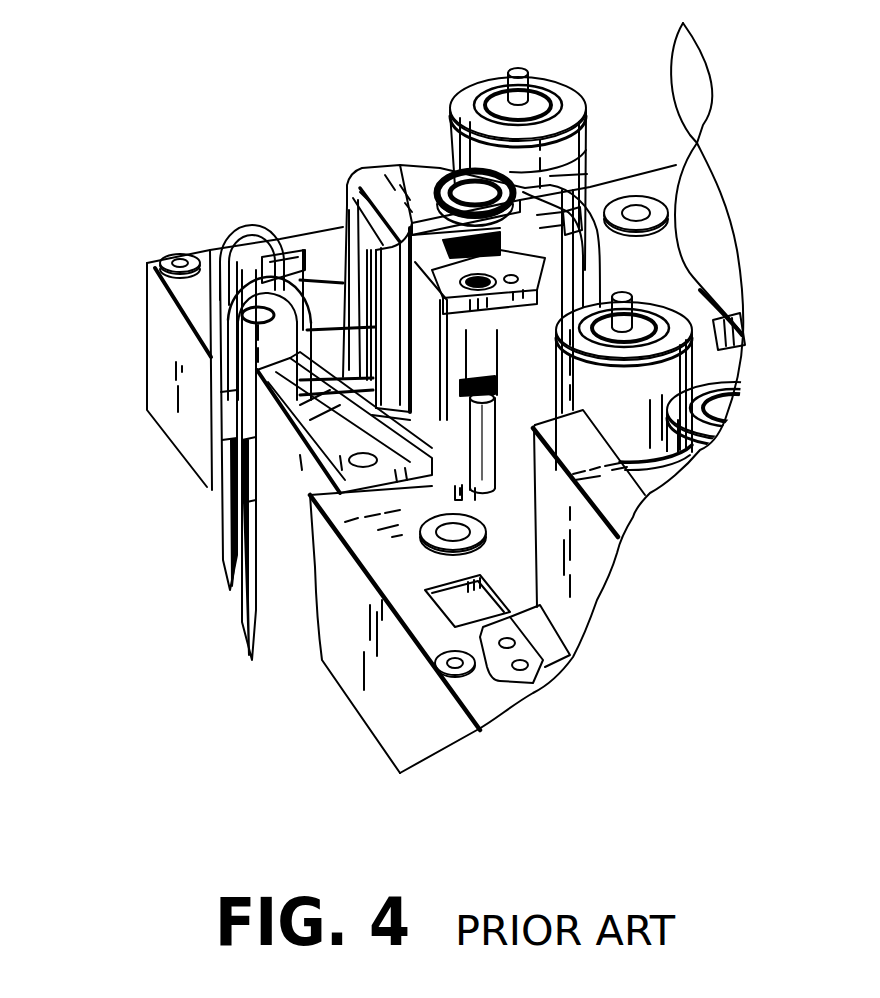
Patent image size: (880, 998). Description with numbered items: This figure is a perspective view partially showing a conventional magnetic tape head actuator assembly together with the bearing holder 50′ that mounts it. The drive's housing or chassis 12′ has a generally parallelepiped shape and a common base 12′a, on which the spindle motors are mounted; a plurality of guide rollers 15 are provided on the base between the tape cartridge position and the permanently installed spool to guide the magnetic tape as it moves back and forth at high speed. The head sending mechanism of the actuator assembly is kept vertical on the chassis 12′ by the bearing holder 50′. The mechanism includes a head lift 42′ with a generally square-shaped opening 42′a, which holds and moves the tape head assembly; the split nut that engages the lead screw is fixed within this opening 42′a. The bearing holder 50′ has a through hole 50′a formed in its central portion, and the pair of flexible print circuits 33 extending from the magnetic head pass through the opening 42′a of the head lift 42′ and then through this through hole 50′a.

The rollers (guide rollers) 15 is at (560, 88).
The bearing holder 50′ is at (343, 227).
The through hole 50′a is at (330, 230).
The housing (chassis) 12′ is at (182, 357).
The common base 12′a is at (193, 292).
The flexible print circuits (FPC) 33 is at (350, 352).
The head lift 42′ is at (472, 335).
The opening 42′a is at (413, 435).